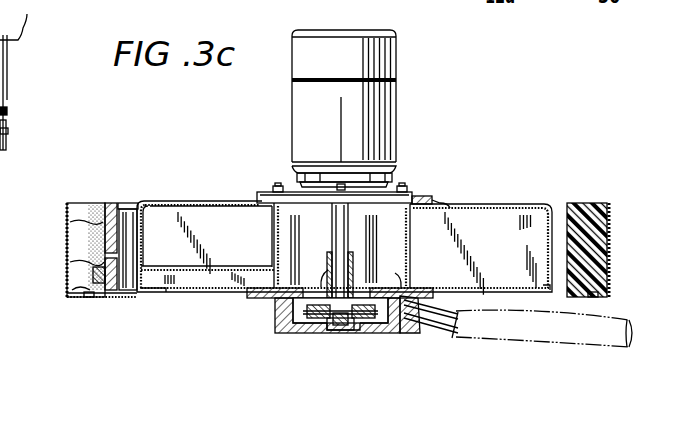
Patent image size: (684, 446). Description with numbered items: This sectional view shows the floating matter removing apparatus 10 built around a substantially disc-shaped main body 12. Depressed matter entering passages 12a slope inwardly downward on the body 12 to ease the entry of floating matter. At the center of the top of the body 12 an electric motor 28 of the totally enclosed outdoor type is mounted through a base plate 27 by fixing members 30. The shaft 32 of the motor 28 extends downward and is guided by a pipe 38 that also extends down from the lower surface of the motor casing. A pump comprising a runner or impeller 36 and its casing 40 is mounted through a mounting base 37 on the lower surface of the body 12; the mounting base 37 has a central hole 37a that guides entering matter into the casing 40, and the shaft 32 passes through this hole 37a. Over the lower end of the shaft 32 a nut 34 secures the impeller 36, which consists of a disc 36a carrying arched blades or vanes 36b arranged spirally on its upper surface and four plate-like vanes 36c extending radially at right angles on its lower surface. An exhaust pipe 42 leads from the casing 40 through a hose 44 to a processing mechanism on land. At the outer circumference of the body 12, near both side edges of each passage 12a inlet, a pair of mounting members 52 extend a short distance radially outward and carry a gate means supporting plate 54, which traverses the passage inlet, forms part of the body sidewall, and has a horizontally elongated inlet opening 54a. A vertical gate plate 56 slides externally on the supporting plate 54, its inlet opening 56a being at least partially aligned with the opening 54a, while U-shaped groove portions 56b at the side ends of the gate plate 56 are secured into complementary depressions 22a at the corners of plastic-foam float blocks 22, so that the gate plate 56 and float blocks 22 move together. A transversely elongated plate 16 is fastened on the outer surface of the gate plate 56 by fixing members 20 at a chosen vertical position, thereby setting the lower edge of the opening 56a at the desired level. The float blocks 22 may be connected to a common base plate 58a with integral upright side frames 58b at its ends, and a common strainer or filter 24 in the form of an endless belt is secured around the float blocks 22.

The floating matter removing apparatus 10 is at (472, 190).
The main body 12 is at (200, 212).
The depressed matter entering passage 12a is at (325, 235).
The transversely elongated plate 16 is at (68, 295).
The fixing members 20 is at (80, 297).
The float blocks 22 is at (93, 207).
The complementary depressions 22a is at (21, 75).
The strainer or filter 24 is at (64, 250).
The base plate 27 is at (428, 199).
The electric motor 28 is at (385, 52).
The fixing members 30 is at (280, 187).
The shaft 32 is at (341, 262).
The nut 34 is at (340, 322).
The runner or impeller 36 is at (363, 322).
The disc 36a is at (276, 320).
The arched blades or vanes 36b is at (271, 303).
The plate-like vanes 36c is at (316, 322).
The mounting base 37 is at (407, 280).
The hole 37a is at (328, 270).
The pipe 38 is at (345, 225).
The casing 40 is at (391, 332).
The drain pipe 42 is at (448, 338).
The hose 44 is at (551, 340).
The mounting members 52 is at (136, 214).
The gate means supporting plate 54 is at (113, 203).
The inlet opening 54a is at (152, 297).
The gate plate 56 is at (103, 217).
The inlet opening 56a is at (95, 272).
The groove portions 56b is at (123, 201).
The common base plate 58a is at (88, 298).
The upright side frames 58b is at (4, 138).